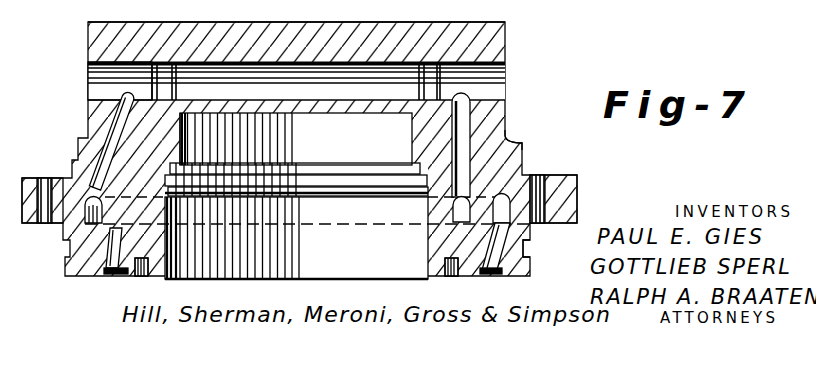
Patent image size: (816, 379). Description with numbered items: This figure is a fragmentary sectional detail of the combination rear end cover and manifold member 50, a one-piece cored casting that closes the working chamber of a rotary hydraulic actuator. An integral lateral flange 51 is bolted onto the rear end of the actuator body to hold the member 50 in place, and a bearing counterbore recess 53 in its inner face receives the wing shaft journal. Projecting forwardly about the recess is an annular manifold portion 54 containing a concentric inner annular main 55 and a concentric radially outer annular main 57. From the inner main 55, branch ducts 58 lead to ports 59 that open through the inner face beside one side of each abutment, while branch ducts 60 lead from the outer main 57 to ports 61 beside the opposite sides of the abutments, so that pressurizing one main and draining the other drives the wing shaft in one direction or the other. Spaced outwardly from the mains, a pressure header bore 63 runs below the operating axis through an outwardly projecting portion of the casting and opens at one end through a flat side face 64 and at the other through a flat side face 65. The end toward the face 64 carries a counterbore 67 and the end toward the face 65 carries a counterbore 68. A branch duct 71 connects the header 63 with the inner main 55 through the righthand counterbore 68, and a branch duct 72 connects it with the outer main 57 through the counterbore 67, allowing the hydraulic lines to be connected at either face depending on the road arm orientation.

The rear end cover and manifold member 50 is at (186, 21).
The integral lateral flange 51 is at (578, 190).
The bearing counterbore recess 53 is at (412, 188).
The annular manifold portion 54 is at (517, 262).
The inner annular main 55 is at (463, 213).
The outer annular main 57 is at (523, 170).
The branch ducts 58 is at (70, 263).
The ports 59 is at (118, 275).
The branch ducts 60 is at (510, 275).
The ports 61 is at (490, 275).
The header bore 63 is at (322, 90).
The flat side face 64 is at (88, 40).
The flat side face 65 is at (506, 31).
The counterbore 67 is at (100, 83).
The counterbore 68 is at (487, 83).
The branch duct 71 is at (465, 122).
The branch duct 72 is at (107, 133).